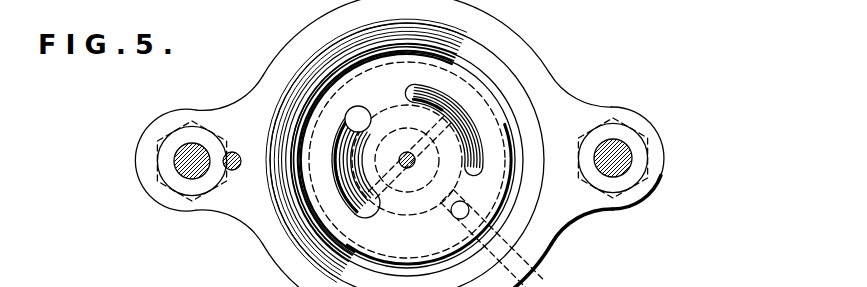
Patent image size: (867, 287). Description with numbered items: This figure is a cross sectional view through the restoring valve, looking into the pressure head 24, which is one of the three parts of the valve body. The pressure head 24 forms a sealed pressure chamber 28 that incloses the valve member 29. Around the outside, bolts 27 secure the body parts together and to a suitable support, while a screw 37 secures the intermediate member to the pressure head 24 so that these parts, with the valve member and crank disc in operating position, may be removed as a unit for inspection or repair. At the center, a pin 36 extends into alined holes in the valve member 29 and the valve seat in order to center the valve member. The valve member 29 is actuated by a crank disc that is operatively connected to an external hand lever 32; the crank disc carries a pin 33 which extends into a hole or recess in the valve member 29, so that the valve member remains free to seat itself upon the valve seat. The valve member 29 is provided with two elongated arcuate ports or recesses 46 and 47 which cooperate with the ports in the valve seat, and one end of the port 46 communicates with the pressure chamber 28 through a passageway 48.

The pressure head 24 is at (545, 76).
The bolts 27 is at (205, 172).
The pressure chamber 28 is at (483, 77).
The valve member 29 is at (436, 81).
The hand lever 32 is at (556, 278).
The pin 33 is at (453, 218).
The pin 36 is at (411, 165).
The screw 37 is at (236, 153).
The arcuate port 46 is at (358, 213).
The arcuate port 47 is at (468, 171).
The passageway 48 is at (356, 108).